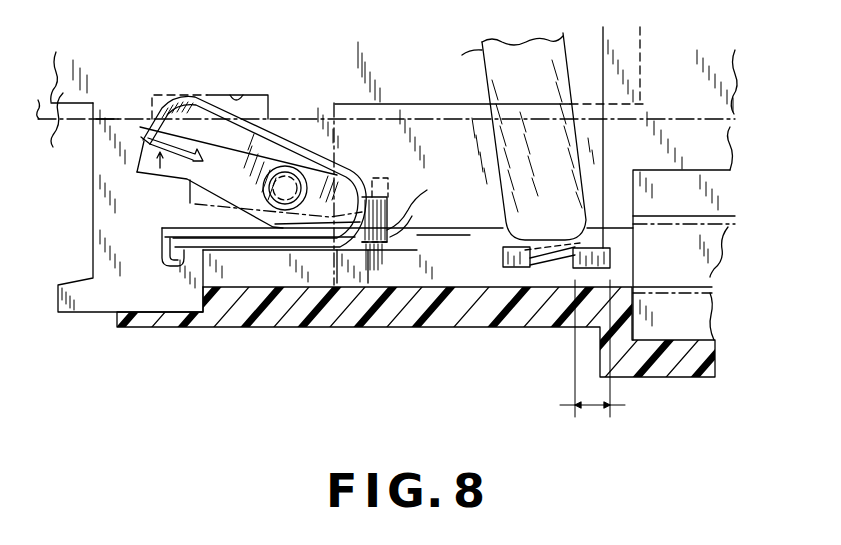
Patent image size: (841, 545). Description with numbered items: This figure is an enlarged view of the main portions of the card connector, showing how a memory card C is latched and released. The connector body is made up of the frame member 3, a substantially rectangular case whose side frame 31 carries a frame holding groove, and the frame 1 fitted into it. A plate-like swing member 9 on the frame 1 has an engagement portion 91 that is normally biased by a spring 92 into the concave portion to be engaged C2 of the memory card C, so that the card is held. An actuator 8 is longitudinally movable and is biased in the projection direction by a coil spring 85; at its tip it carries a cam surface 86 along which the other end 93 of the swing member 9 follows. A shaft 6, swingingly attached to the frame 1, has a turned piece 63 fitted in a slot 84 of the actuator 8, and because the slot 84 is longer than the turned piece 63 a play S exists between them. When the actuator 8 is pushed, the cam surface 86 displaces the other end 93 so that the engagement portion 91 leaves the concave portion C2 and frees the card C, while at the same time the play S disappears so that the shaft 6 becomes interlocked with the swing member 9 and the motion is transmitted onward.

The frame 1 is at (120, 182).
The frame member 3 is at (253, 330).
The shaft 6 is at (462, 52).
The actuator 8 is at (330, 252).
The swing member 9 is at (222, 186).
The side frame 31 is at (348, 330).
The turned piece 63 is at (542, 272).
The slot 84 is at (497, 262).
The coil spring 85 is at (698, 298).
The cam surface 86 is at (407, 220).
The engagement portion 91 is at (178, 84).
The spring 92 is at (279, 119).
The other end of swing member 93 is at (392, 225).
The memory card C is at (745, 55).
The concave portion to be engaged C2 is at (236, 93).
The play S is at (592, 363).